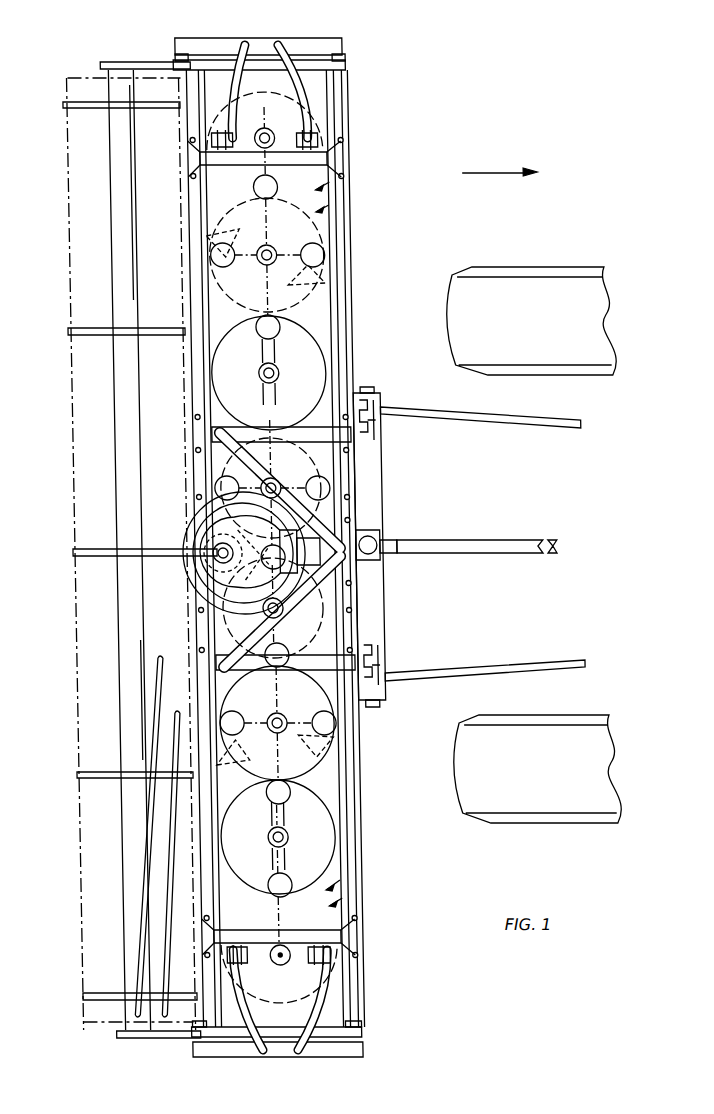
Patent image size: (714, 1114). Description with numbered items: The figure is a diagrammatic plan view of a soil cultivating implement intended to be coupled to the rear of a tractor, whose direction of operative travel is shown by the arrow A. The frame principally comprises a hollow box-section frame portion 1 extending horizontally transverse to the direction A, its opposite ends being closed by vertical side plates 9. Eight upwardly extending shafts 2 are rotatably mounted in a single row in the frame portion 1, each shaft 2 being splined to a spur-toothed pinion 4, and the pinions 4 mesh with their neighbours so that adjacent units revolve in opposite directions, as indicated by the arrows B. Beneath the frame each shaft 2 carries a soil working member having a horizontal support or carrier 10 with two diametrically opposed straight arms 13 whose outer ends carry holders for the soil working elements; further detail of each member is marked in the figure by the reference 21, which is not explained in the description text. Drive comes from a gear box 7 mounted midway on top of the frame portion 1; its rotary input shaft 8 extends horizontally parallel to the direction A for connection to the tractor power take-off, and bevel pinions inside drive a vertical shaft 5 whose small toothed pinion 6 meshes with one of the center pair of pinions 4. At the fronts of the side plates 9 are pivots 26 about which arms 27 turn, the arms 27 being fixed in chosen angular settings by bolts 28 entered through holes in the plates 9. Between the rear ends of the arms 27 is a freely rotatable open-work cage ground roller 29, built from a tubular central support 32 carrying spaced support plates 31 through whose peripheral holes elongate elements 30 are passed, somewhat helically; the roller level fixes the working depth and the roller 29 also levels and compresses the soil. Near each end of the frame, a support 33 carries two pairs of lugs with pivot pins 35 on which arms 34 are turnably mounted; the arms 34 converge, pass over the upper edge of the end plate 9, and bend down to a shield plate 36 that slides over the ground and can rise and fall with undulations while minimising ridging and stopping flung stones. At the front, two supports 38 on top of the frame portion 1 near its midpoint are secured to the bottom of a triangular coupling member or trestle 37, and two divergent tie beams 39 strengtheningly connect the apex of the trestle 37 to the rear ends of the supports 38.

The hollow box-section frame portion 1 is at (352, 333).
The shafts 2 is at (280, 132).
The pinion 4 is at (228, 318).
The shaft 5 is at (212, 556).
The toothed pinion 6 is at (198, 580).
The gear box 7 is at (192, 598).
The rotary input shaft 8 is at (348, 524).
The side plates 9 is at (356, 66).
The support or carrier 10 is at (303, 245).
The arms 13 is at (284, 352).
The guide 21 is at (240, 232).
The pivots 26 is at (352, 56).
The arms 27 is at (116, 62).
The bolts 28 is at (180, 58).
The ground roller 29 is at (72, 305).
The elongate elements 30 is at (152, 862).
The support plates 31 is at (74, 775).
The central support 32 is at (118, 634).
The supports 33 is at (238, 170).
The arms 34 is at (275, 36).
The pivot pins 35 is at (242, 963).
The shield plate 36 is at (332, 38).
The coupling member or trestle 37 is at (384, 618).
The supports 38 is at (258, 418).
The tie beams 39 is at (276, 478).
The direction of operative travel A is at (499, 163).
The directions of operative rotation B is at (338, 206).